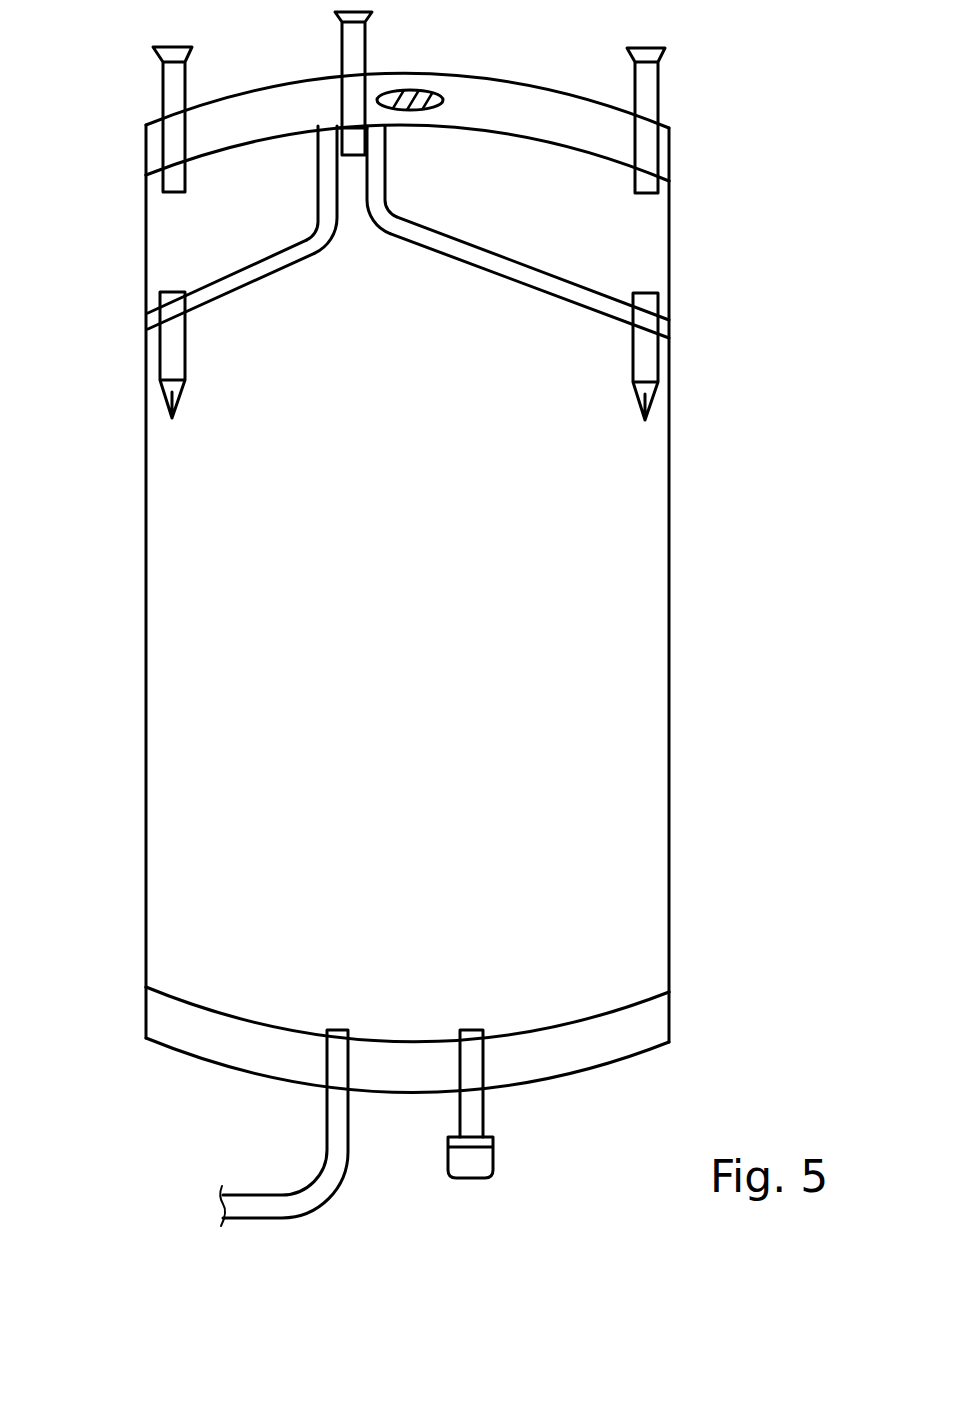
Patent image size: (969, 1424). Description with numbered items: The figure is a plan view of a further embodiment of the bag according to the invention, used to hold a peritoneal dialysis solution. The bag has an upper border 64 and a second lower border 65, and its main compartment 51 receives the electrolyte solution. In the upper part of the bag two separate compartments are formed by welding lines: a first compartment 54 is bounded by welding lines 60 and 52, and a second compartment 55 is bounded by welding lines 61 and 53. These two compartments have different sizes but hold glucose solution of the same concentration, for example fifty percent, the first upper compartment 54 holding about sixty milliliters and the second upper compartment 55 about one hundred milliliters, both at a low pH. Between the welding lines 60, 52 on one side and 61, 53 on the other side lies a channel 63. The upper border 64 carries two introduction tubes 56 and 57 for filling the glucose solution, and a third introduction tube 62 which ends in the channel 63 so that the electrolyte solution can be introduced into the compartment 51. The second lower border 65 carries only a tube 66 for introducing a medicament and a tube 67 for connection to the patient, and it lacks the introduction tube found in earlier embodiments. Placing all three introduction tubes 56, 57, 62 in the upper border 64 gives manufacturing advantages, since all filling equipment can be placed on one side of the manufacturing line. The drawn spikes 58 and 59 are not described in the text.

The compartment 51 is at (412, 583).
The welding line 52 is at (210, 281).
The welding line 53 is at (592, 288).
The first compartment 54 is at (172, 228).
The second compartment 55 is at (657, 232).
The introduction tube 56 is at (156, 93).
The introduction tube 57 is at (662, 88).
The left spike 58 is at (172, 368).
The right spike 59 is at (657, 367).
The welding line 60 is at (188, 166).
The welding line 61 is at (576, 169).
The third introduction tube 62 is at (370, 45).
The channel 63 is at (353, 182).
The upper border 64 is at (672, 155).
The second lower border 65 is at (670, 1013).
The tube 66 is at (460, 1115).
The tube 67 is at (350, 1153).